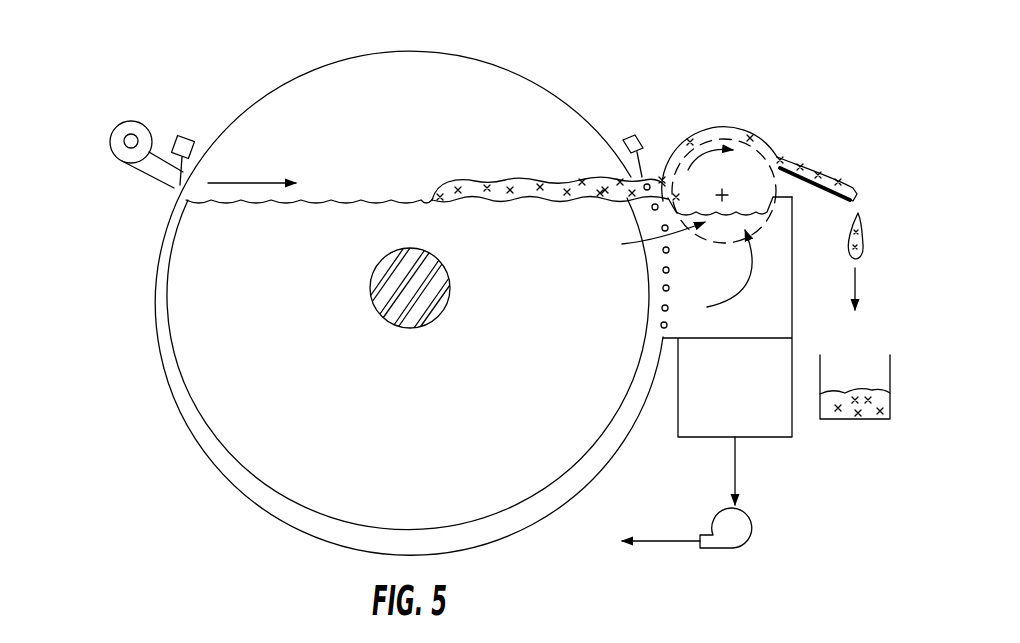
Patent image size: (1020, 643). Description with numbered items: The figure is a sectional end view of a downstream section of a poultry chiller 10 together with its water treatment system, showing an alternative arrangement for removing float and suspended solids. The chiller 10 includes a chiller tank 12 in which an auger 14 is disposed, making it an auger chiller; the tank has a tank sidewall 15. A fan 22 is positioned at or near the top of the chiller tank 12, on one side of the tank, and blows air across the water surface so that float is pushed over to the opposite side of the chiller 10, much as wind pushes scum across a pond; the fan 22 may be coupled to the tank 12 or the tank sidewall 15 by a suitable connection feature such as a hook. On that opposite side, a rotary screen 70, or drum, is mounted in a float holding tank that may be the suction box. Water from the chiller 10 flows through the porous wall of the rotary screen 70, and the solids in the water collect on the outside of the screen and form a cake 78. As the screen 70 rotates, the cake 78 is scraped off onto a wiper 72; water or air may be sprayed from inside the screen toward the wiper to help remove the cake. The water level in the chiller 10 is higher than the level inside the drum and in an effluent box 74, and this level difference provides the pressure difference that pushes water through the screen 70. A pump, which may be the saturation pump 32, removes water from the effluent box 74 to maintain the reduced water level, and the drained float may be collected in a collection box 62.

The poultry chiller 10 is at (100, 240).
The chiller tank 12 is at (175, 402).
The auger 14 is at (275, 82).
The tank sidewall 15 is at (154, 327).
The fan 22 is at (80, 137).
The saturation pump 32 is at (768, 536).
The collection box 62 is at (906, 396).
The rotary screen 70 is at (738, 129).
The wiper 72 is at (828, 192).
The effluent box 74 is at (770, 443).
The cake 78 is at (764, 133).